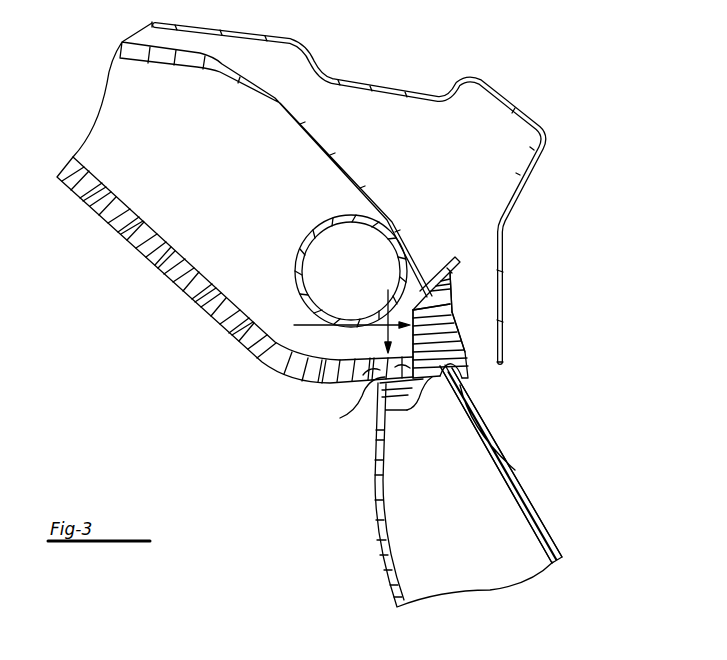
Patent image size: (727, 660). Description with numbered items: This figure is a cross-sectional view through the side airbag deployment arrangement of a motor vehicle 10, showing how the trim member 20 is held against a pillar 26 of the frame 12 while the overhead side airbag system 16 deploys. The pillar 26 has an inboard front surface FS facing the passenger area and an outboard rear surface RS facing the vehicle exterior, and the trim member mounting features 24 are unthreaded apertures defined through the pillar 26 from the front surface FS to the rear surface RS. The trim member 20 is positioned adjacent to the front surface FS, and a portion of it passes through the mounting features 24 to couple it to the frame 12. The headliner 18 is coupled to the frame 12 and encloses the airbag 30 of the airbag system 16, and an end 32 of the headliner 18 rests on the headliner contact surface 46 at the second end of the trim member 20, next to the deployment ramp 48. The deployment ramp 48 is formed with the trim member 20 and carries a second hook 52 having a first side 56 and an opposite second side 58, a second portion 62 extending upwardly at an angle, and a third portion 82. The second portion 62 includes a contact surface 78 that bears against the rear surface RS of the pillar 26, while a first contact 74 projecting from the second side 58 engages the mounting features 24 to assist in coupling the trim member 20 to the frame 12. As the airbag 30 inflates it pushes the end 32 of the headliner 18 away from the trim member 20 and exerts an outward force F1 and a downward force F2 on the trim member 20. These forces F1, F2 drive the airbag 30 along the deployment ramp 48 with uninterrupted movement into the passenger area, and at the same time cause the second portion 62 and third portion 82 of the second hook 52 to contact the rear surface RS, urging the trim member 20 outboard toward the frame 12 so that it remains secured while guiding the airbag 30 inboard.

The motor vehicle 10 is at (378, 192).
The frame 12 is at (378, 172).
The overhead side airbag system 16 is at (275, 218).
The headliner 18 is at (96, 262).
The trim member 20 is at (431, 501).
The trim member mounting features 24 is at (434, 384).
The pillar 26 is at (512, 464).
The airbag 30 is at (296, 247).
The end of the headliner 32 is at (341, 417).
The headliner contact surface 46 is at (398, 368).
The deployment ramp 48 is at (454, 279).
The second hook 52 is at (470, 337).
The first side 56 is at (407, 290).
The second side 58 is at (467, 285).
The second portion 62 is at (470, 321).
The first contact 74 is at (469, 373).
The contact surface 78 is at (414, 298).
The third portion 82 is at (448, 255).
The outward force F1 is at (343, 324).
The downward force F2 is at (387, 290).
The rear surface RS is at (563, 558).
The front surface FS is at (547, 563).